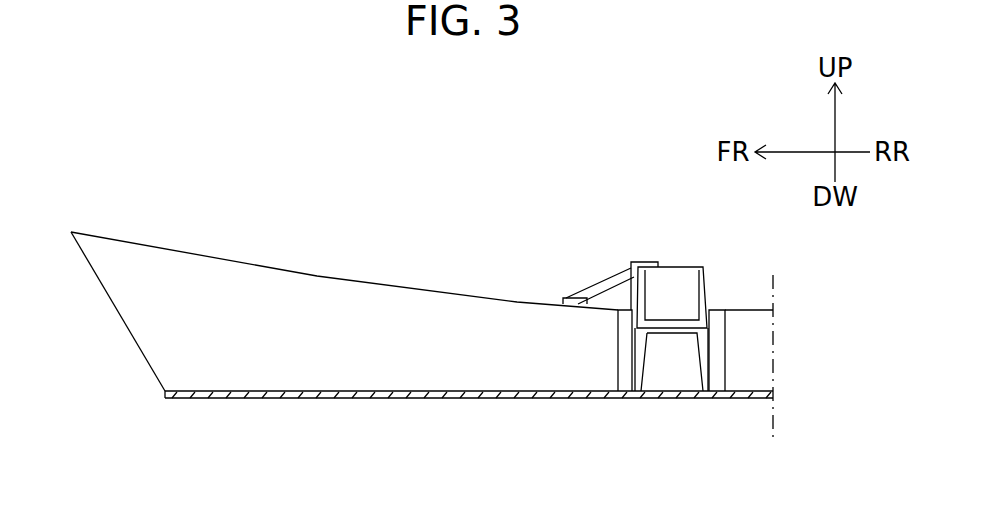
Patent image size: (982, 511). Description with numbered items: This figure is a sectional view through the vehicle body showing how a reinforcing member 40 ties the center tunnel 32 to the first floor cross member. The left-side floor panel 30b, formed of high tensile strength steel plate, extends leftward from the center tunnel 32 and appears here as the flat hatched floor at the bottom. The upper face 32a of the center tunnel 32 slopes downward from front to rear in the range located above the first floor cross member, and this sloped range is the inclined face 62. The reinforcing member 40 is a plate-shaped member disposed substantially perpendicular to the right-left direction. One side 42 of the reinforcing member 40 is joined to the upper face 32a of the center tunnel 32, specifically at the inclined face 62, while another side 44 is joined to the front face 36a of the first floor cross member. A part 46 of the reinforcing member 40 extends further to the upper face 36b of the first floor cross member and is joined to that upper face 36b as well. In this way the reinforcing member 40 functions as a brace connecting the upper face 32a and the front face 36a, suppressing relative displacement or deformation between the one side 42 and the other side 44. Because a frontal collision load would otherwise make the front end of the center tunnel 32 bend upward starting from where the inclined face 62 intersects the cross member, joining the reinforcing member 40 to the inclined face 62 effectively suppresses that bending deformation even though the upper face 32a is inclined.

The left-side floor panel 30b is at (233, 396).
The center tunnel 32 is at (163, 285).
The upper face of the center tunnel 32a is at (315, 273).
The front face of the first floor cross member 36a is at (631, 262).
The upper face of the first floor cross member 36b is at (690, 267).
The reinforcing member 40 is at (579, 190).
The one side of the reinforcing member 42 is at (573, 293).
The other side of the reinforcing member 44 is at (627, 273).
The part of the reinforcing member 46 is at (650, 262).
The inclined face 62 is at (543, 302).